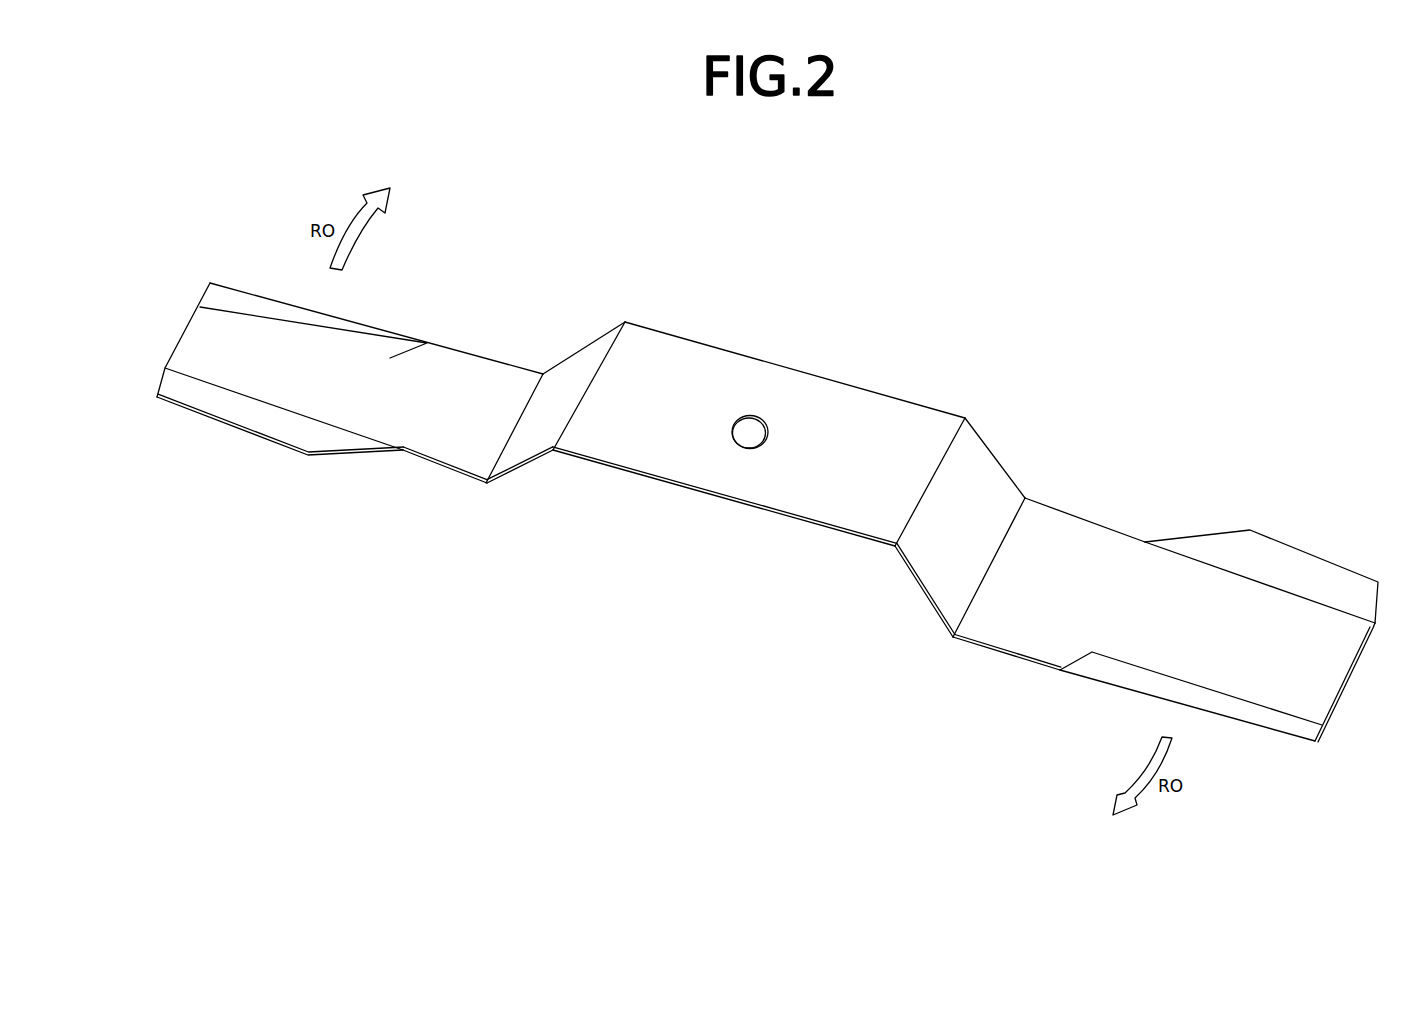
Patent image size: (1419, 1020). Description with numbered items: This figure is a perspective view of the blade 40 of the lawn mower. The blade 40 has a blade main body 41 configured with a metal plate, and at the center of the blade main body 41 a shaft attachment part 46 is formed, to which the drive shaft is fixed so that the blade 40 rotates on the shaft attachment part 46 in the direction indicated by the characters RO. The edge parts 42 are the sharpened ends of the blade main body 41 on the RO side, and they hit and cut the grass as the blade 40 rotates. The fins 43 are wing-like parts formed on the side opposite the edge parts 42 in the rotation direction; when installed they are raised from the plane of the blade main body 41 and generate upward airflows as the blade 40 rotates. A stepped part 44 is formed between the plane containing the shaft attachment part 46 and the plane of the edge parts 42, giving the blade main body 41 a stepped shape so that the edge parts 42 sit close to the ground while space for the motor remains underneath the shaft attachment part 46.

The blade 40 is at (752, 297).
The blade main body 41 is at (862, 388).
The edge parts 42 is at (367, 327).
The fins 43 is at (328, 442).
The stepped part 44 is at (520, 453).
The shaft attachment part 46 is at (768, 433).